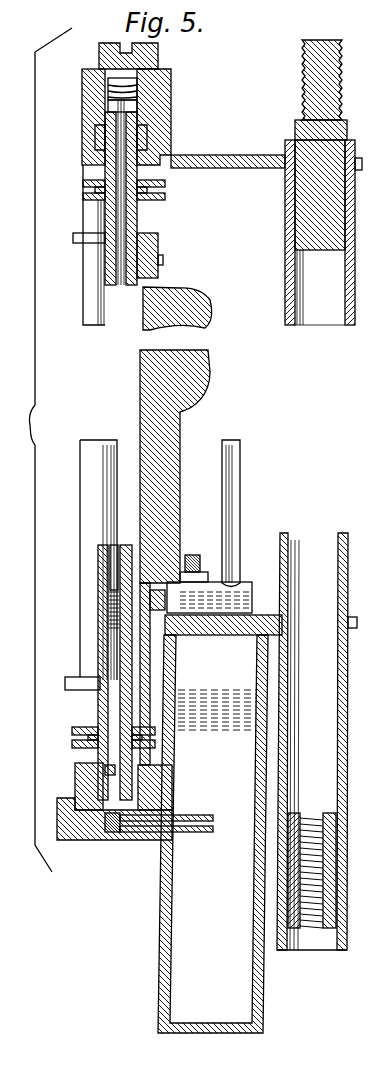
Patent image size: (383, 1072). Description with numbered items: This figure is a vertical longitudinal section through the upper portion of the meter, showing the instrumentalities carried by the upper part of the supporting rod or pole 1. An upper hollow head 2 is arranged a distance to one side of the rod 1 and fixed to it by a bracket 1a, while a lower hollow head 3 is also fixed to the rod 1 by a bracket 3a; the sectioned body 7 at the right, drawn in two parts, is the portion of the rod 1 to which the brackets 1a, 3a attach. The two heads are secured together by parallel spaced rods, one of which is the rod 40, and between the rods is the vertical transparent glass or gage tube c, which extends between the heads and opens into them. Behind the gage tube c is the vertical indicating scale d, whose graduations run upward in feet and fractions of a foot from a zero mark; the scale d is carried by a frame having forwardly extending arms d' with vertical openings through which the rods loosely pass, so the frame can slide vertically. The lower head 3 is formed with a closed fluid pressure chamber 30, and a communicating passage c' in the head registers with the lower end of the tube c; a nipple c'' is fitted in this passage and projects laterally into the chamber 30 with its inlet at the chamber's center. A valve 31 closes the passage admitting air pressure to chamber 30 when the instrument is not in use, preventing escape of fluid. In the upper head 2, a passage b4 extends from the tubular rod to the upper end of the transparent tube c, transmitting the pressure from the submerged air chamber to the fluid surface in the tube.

The upper hollow head 2 is at (171, 113).
The passage b4 is at (118, 113).
The bracket 1a is at (203, 157).
The threaded socket body 7 is at (353, 275).
The transparent glass or gage tube c is at (110, 450).
The forwardly extending arms d' is at (74, 462).
The rod 40 is at (103, 320).
The vertical indicating scale d is at (177, 526).
The valve 31 is at (218, 585).
The bracket 3a is at (272, 612).
The lower hollow head 3 is at (258, 772).
The closed fluid pressure chamber 30 is at (217, 724).
The supporting rod or pole 1 is at (311, 535).
The passage c' is at (114, 818).
The tube or nipple c'' is at (138, 819).